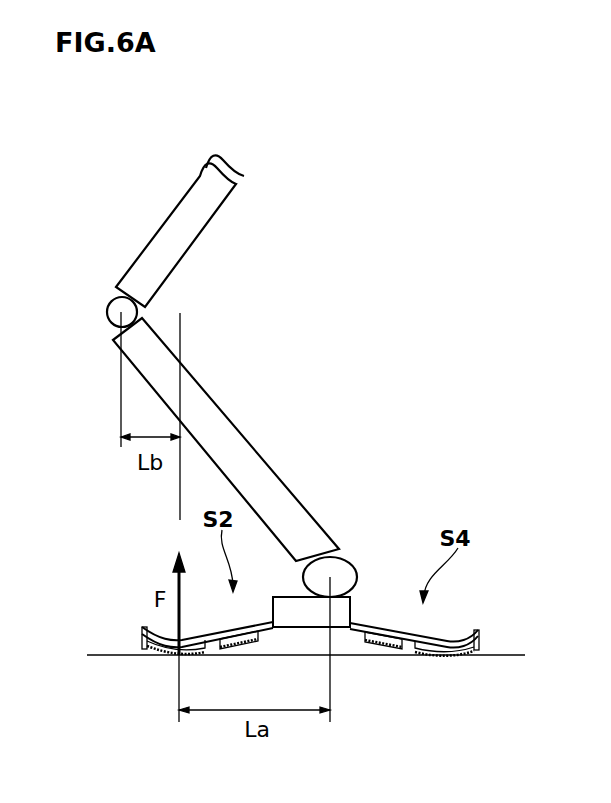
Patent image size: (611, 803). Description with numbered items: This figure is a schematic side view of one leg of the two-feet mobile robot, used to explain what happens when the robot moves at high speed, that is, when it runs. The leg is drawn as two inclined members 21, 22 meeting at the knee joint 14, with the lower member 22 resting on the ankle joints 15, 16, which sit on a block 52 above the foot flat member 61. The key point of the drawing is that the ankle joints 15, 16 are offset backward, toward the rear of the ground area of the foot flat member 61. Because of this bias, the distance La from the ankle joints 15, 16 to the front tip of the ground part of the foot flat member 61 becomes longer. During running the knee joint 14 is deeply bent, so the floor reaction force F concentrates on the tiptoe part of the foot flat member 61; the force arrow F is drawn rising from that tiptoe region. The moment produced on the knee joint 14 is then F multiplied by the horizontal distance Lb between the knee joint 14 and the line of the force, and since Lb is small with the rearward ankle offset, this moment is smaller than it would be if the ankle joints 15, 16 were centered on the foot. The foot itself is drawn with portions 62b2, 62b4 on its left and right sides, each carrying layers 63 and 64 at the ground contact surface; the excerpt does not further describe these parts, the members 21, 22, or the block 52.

The knee joint 14 is at (118, 305).
The first link 21 is at (197, 222).
The second link 22 is at (247, 460).
The ankle joint 15 is at (354, 542).
The ankle joint 16 is at (347, 573).
The mounting block 52 is at (343, 612).
The foot flat member 61 is at (420, 520).
The plate portion 62b2 is at (142, 630).
The plate portion 62b4 is at (483, 637).
The pad 63 is at (143, 640).
The friction layer 64 is at (140, 645).